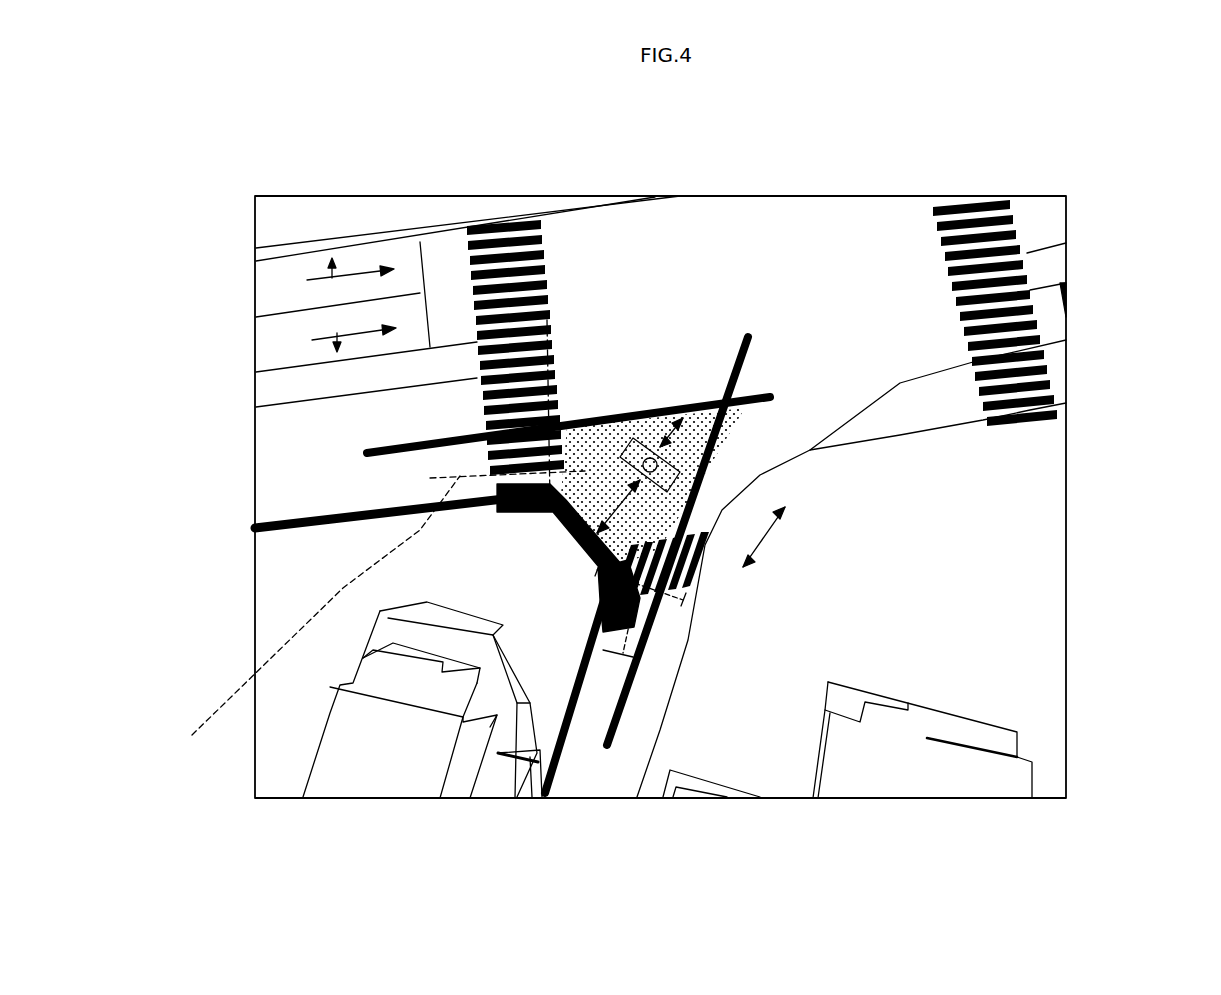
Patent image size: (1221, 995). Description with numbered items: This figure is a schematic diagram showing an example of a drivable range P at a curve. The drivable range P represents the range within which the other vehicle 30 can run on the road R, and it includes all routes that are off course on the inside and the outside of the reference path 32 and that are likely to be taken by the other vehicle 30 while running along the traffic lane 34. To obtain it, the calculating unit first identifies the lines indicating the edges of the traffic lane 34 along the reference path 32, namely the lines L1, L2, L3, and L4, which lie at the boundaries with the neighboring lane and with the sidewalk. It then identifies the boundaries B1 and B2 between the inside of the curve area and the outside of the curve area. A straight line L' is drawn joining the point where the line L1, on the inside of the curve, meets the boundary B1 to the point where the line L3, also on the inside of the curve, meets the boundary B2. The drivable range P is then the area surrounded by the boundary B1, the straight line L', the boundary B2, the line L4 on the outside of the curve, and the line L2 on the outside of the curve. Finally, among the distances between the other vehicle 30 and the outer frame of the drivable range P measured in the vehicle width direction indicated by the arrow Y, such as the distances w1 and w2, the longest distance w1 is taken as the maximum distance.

The boundary B2 is at (515, 286).
The other vehicle 30 is at (669, 286).
The line L4 is at (477, 389).
The traffic lane 34 is at (627, 565).
The line L3 is at (345, 544).
The reference path 32 is at (381, 542).
The straight line L' is at (450, 663).
The distance w1 is at (504, 684).
The line L1 is at (562, 729).
The road R is at (615, 824).
The line L2 is at (698, 598).
The boundary B1 is at (781, 697).
The distance w2 is at (927, 385).
The drivable range P is at (878, 499).
The arrow Y is at (930, 572).